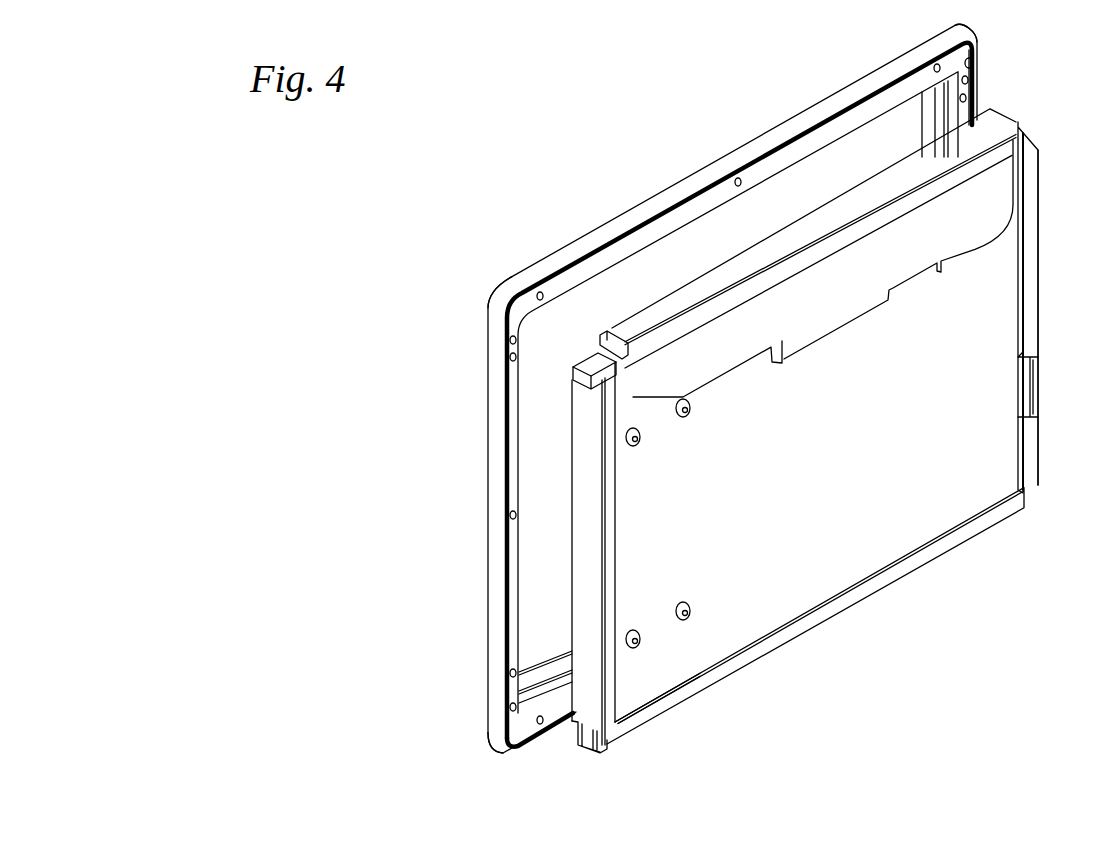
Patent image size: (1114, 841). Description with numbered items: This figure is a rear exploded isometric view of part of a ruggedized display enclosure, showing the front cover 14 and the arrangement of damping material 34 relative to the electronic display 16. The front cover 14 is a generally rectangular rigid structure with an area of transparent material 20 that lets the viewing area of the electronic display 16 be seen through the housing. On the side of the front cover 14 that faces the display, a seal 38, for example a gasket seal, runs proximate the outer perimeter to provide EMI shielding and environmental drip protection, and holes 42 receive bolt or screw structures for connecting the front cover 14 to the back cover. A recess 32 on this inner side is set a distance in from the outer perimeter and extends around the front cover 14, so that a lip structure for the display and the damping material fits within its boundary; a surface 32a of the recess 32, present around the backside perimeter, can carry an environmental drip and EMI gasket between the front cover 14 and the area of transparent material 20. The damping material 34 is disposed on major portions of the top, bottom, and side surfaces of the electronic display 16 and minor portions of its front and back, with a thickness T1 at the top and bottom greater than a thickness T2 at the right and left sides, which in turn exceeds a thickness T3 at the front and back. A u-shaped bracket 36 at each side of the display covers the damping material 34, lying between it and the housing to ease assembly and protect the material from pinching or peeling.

The front cover 14 is at (646, 163).
The electronic display 16 is at (1010, 125).
The area of transparent material 20 is at (545, 578).
The recess 32 is at (534, 699).
The surface of the recess 32a is at (556, 675).
The damping material 34 is at (487, 301).
The bracket 36 is at (587, 508).
The seal 38 is at (638, 240).
The holes 42 is at (742, 182).
The thickness T1 is at (678, 746).
The thickness T2 is at (1056, 131).
The thickness T3 is at (678, 724).